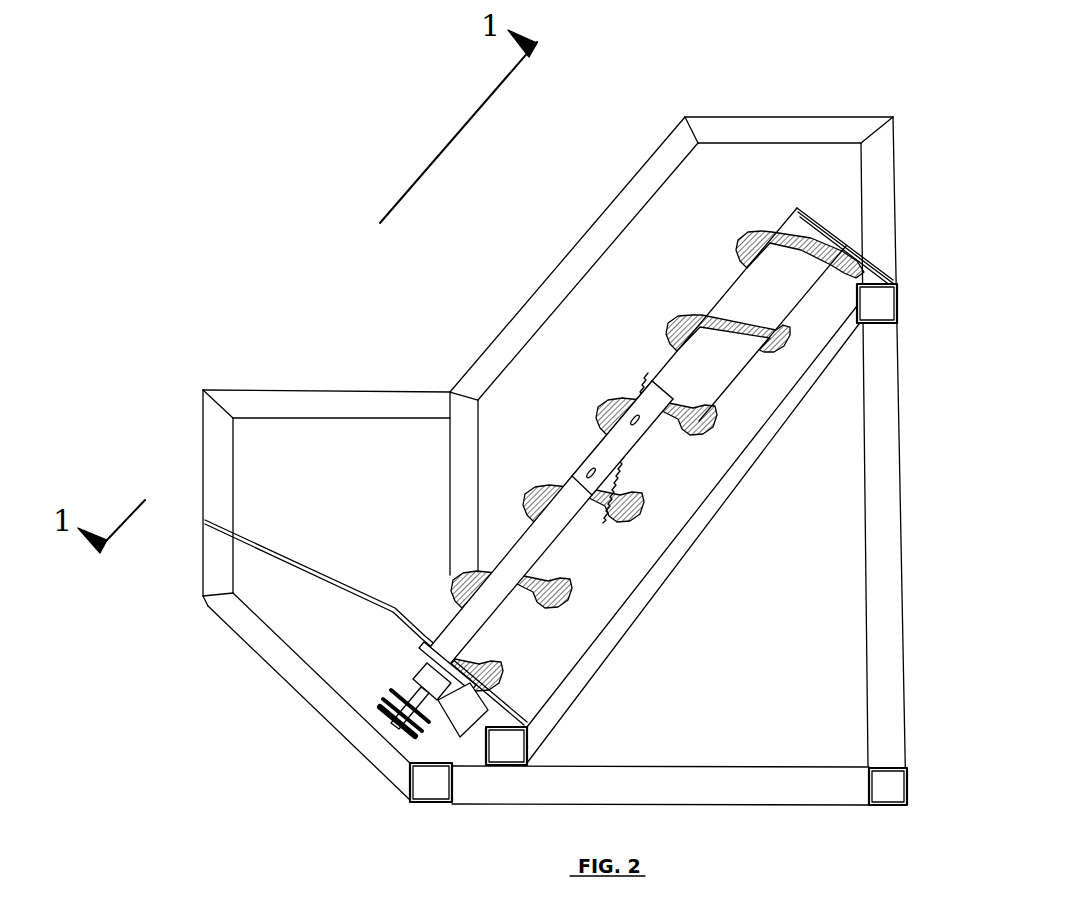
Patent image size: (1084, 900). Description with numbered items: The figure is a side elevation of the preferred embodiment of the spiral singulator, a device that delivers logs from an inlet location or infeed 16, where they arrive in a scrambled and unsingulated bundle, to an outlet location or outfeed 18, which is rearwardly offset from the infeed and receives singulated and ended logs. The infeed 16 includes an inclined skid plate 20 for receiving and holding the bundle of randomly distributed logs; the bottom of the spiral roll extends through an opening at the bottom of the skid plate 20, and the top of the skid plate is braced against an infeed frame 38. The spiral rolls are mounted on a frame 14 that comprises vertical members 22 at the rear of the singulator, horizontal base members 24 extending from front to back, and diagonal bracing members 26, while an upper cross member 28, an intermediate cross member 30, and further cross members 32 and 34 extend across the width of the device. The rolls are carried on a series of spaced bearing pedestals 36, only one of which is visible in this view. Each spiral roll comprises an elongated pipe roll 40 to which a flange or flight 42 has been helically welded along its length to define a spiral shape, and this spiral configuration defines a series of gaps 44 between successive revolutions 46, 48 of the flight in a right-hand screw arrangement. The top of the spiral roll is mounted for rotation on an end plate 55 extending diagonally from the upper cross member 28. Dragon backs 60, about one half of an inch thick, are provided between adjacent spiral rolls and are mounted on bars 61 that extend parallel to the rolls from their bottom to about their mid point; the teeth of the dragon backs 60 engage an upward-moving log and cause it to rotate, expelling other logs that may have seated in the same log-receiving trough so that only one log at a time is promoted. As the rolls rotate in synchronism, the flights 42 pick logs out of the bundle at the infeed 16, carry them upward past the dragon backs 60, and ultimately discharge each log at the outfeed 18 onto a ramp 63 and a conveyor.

The frame 14 is at (529, 278).
The inlet location (infeed) 16 is at (246, 448).
The outlet location (outfeed) 18 is at (851, 204).
The inclined skid plate 20 is at (256, 540).
The vertical members 22 is at (892, 597).
The horizontal base members 24 is at (663, 793).
The diagonal bracing members 26 is at (683, 562).
The upper cross member 28 is at (885, 307).
The intermediate cross member 30 is at (502, 757).
The cross member 32 is at (428, 798).
The cross member 34 is at (886, 793).
The bearing pedestal 36 is at (442, 748).
The infeed frame 38 is at (217, 585).
The pipe roll 40 is at (736, 298).
The flight 42 is at (744, 238).
The gaps 44 is at (654, 375).
The revolution of the flight 46 is at (678, 318).
The revolution of the flight 48 is at (598, 405).
The end plate 55 is at (862, 250).
The dragon backs 60 is at (601, 452).
The bars 61 is at (525, 541).
The ramp 63 is at (858, 232).